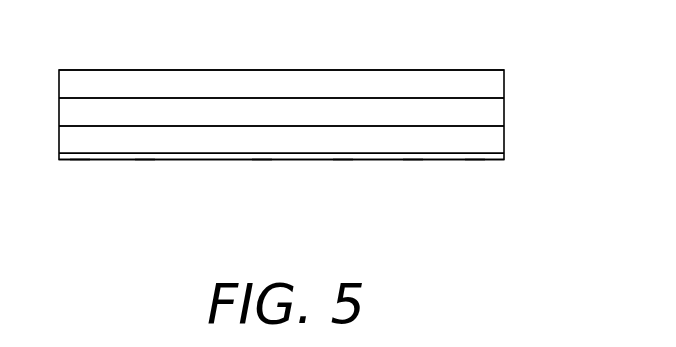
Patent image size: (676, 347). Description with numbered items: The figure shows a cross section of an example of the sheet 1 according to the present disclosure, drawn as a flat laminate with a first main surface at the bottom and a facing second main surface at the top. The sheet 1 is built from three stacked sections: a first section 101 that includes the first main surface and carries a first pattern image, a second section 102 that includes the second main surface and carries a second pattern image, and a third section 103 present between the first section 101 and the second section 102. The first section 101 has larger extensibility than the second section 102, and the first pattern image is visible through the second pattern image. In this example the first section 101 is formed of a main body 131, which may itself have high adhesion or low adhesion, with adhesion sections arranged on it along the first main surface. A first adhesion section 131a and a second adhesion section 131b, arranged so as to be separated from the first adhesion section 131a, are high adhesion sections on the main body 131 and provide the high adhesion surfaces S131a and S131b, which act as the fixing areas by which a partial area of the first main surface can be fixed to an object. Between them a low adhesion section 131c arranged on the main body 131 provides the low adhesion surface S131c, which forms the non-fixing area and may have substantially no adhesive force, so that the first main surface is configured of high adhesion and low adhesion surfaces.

The sheet 1 is at (335, 62).
The first section 101 is at (512, 127).
The second section 102 is at (512, 71).
The third section 103 is at (512, 99).
The main body 131 is at (213, 130).
The first adhesion section 131a is at (145, 160).
The second adhesion section 131b is at (475, 160).
The low adhesion section 131c is at (343, 160).
The high adhesion surface S131a is at (78, 160).
The high adhesion surface S131b is at (413, 160).
The low adhesion surface S131c is at (262, 160).